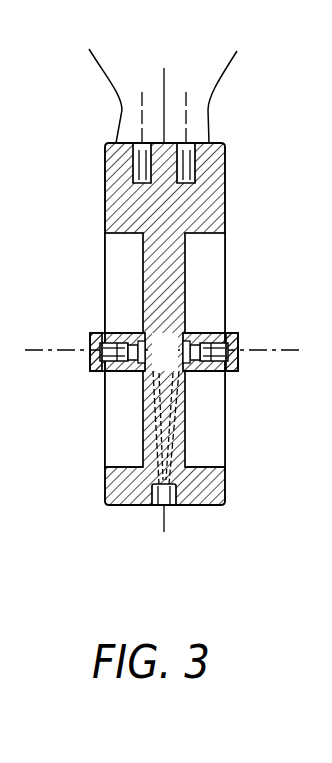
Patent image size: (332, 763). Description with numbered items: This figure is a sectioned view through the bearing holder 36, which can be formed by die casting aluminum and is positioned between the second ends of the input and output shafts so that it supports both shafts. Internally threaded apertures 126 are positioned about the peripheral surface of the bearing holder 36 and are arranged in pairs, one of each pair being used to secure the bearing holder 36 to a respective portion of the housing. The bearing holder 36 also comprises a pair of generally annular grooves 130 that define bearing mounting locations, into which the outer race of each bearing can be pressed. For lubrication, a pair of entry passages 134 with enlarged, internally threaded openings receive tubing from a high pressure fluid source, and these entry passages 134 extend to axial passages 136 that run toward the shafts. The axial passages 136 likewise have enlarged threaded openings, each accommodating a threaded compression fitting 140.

The bearing holder 36 is at (204, 194).
The internally threaded apertures 126 is at (160, 85).
The annular grooves 130 is at (125, 466).
The entry passages 134 is at (185, 393).
The axial passages 136 is at (120, 373).
The threaded compression fitting 140 is at (97, 333).